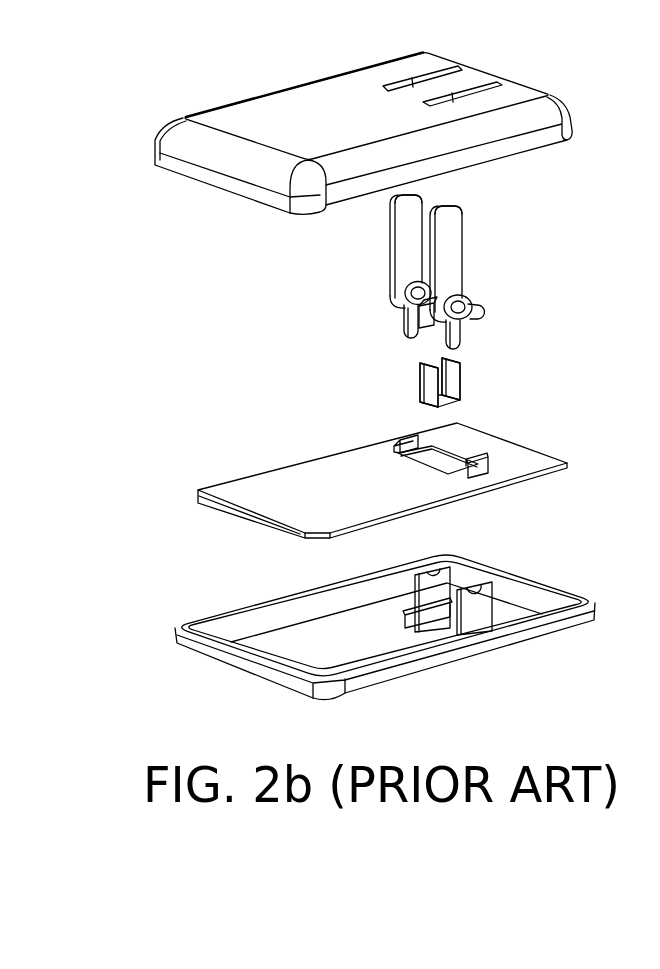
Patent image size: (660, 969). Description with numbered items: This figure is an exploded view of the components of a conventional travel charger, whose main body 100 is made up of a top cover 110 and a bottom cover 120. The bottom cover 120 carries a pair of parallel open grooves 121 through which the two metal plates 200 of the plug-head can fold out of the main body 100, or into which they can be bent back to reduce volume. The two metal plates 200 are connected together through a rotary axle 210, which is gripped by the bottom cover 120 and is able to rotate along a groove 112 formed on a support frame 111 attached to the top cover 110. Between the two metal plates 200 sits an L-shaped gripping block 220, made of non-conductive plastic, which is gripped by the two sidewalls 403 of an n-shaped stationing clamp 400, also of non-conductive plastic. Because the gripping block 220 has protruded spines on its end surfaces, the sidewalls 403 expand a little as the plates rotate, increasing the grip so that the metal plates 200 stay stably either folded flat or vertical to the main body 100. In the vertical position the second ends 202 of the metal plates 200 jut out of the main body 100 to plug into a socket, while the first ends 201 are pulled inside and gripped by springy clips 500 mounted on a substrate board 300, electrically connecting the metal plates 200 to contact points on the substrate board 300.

The main body 100 is at (119, 760).
The top cover 110 is at (232, 663).
The support frame 111 is at (428, 597).
The groove 112 is at (435, 576).
The bottom cover 120 is at (250, 109).
The open grooves 121 is at (463, 67).
The metal plates 200 is at (412, 271).
The first ends 201 is at (447, 345).
The second ends 202 is at (410, 205).
The rotary axle 210 is at (479, 321).
The L-shaped gripping block 220 is at (394, 318).
The substrate board 300 is at (267, 495).
The n-shaped stationing clamp 400 is at (464, 405).
The sidewalls 403 is at (421, 383).
The springy clips 500 is at (400, 442).